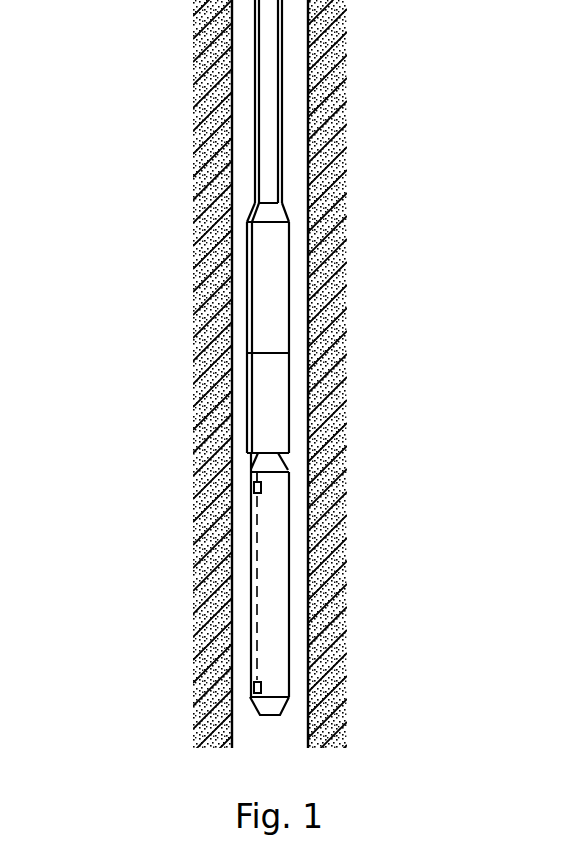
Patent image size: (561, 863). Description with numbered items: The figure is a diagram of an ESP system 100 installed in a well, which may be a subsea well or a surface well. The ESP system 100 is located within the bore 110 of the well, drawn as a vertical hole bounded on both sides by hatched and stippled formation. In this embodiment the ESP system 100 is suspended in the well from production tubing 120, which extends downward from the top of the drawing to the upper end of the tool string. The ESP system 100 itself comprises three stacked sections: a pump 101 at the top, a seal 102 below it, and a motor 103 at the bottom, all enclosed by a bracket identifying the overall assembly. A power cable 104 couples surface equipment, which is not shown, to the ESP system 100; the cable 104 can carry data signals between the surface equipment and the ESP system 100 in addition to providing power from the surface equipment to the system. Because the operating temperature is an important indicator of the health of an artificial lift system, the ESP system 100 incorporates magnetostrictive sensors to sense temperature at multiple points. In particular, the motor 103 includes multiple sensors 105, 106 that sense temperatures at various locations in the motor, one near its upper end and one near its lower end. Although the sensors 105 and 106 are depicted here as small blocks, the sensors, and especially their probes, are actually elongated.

The ESP system 100 is at (242, 459).
The pump 101 is at (289, 257).
The seal 102 is at (289, 402).
The motor 103 is at (289, 611).
The power cable 104 is at (255, 78).
The sensor 105 is at (261, 484).
The sensor 106 is at (261, 683).
The bore 110 is at (233, 176).
The production tubing 120 is at (282, 145).